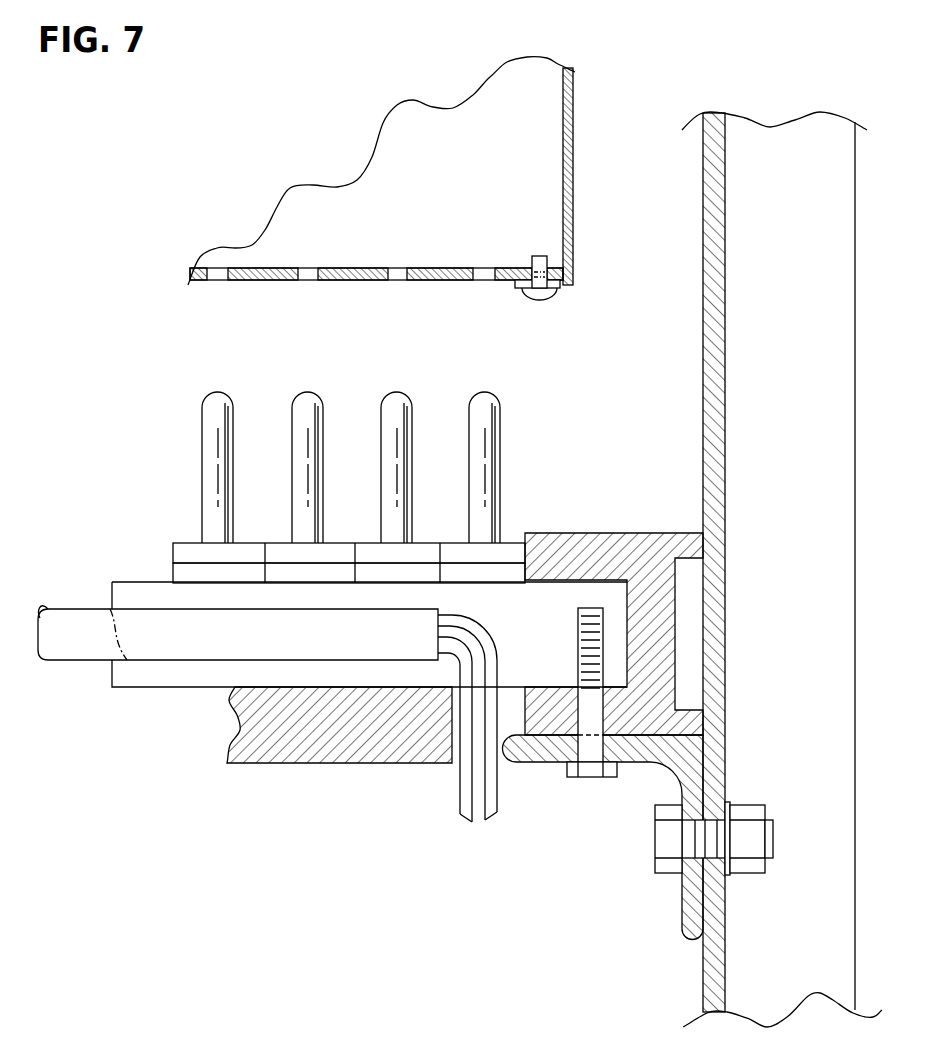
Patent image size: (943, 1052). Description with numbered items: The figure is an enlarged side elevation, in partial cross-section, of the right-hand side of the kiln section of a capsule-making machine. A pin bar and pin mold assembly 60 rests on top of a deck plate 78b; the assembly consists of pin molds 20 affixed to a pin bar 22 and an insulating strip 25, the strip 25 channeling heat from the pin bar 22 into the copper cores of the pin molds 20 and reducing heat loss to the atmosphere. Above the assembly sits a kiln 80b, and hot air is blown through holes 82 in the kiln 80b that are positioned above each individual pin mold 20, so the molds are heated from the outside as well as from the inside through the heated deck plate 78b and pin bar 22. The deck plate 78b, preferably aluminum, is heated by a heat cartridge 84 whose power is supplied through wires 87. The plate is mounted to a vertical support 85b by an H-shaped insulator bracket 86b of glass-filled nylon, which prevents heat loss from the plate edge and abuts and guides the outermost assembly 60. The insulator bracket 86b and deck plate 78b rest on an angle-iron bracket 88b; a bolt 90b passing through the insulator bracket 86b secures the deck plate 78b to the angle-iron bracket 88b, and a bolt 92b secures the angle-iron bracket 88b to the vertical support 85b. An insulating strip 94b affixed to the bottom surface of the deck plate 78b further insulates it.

The pin mold 20 is at (315, 392).
The pin bar 22 is at (185, 577).
The insulating strip 25 is at (188, 553).
The pin bar and pin mold assembly 60 is at (290, 453).
The deck plate 78b is at (145, 675).
The kiln 80b is at (538, 178).
The holes 82 is at (400, 262).
The heat cartridge 84 is at (68, 648).
The vertical support 85b is at (710, 378).
The insulator bracket 86b is at (590, 543).
The wires 87 is at (492, 817).
The angle-iron bracket 88b is at (683, 910).
The bolt 90b is at (590, 772).
The bolt 92b is at (750, 812).
The insulating strip 94b is at (323, 750).